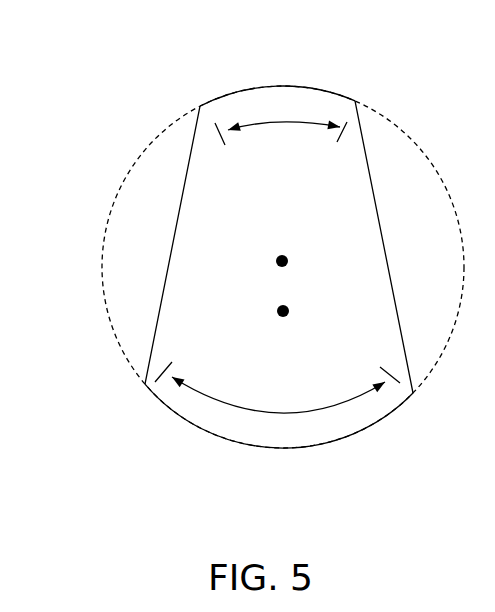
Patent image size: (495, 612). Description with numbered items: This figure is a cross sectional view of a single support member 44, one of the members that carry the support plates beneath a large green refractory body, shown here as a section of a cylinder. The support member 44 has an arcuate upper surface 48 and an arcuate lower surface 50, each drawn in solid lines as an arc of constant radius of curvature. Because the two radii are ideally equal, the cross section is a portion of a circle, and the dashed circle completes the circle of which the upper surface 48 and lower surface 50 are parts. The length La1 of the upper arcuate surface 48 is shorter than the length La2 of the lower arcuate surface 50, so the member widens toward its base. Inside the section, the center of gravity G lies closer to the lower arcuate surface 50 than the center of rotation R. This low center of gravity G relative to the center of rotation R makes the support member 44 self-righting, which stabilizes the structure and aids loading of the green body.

The support member 44 is at (378, 168).
The arcuate upper surface 48 is at (267, 88).
The arcuate lower surface 50 is at (217, 434).
The center of rotation R is at (280, 255).
The center of gravity G is at (284, 318).
The length of the upper arcuate surface La1 is at (281, 138).
The length of the lower arcuate surface La2 is at (277, 387).